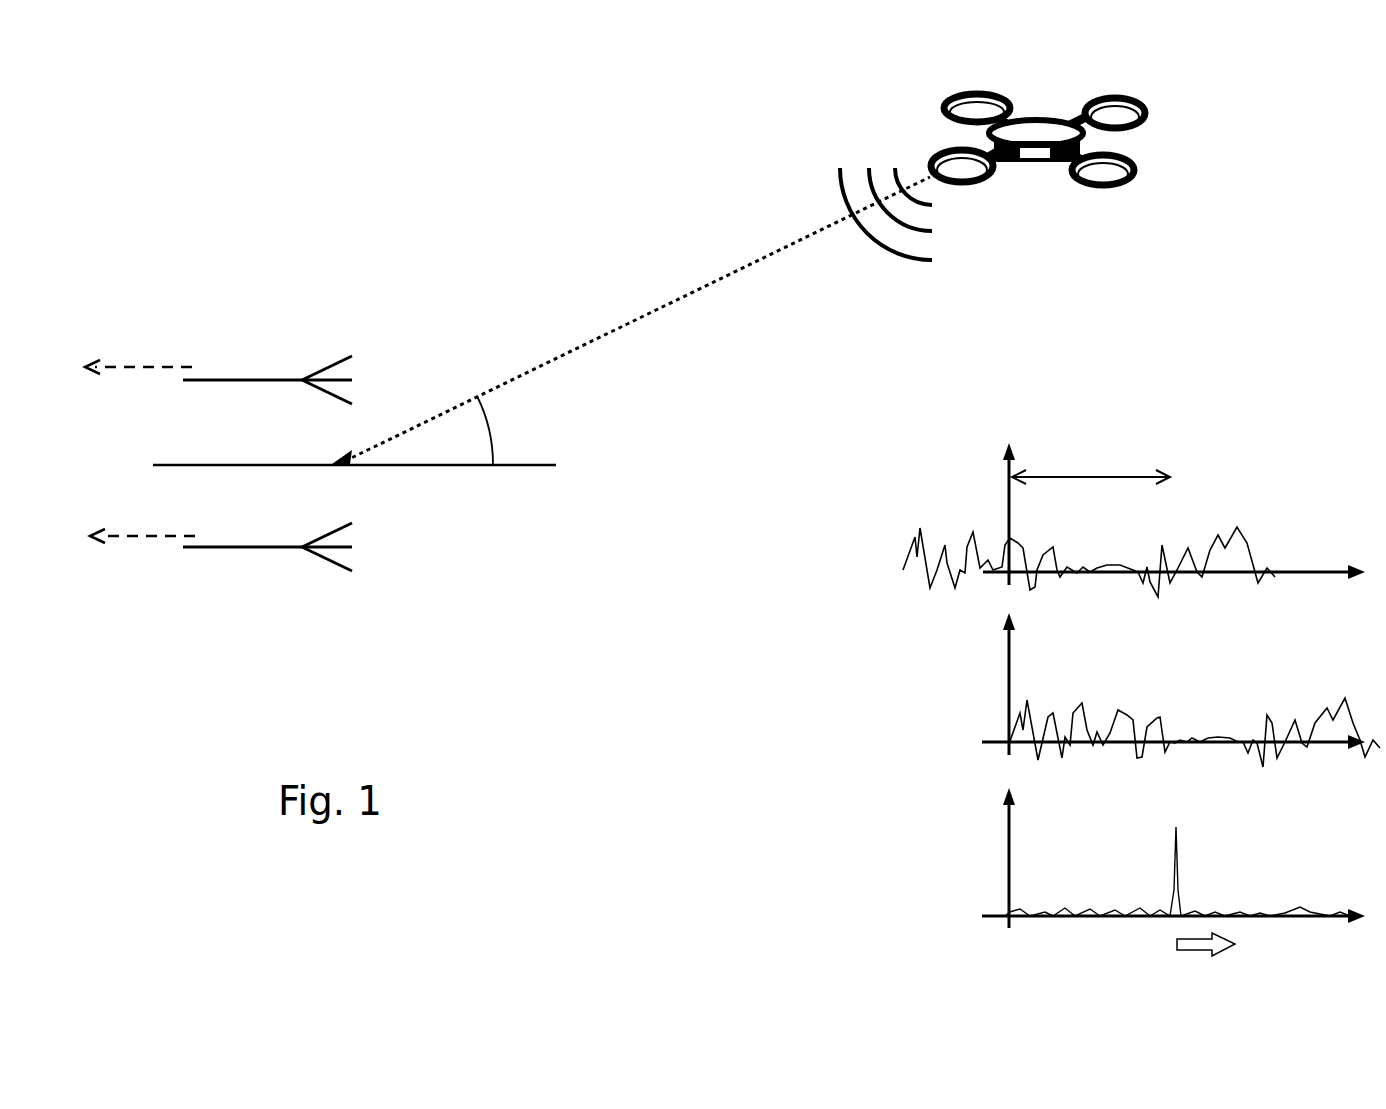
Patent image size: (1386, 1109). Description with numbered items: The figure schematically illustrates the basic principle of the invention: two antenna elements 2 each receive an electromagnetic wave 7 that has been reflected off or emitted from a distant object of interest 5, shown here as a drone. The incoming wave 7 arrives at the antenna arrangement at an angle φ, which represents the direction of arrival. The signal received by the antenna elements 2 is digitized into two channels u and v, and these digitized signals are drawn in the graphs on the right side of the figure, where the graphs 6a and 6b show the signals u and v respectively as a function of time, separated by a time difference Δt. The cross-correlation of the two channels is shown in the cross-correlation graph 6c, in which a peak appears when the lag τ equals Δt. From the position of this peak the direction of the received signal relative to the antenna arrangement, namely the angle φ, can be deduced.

The antenna elements 2 is at (217, 380).
The object of interest 5 is at (1123, 186).
The electromagnetic wave 7 is at (613, 328).
The graph of digitized signal u 6a is at (868, 516).
The graph of digitized signal v 6b is at (868, 681).
The cross-correlation graph 6c is at (873, 865).